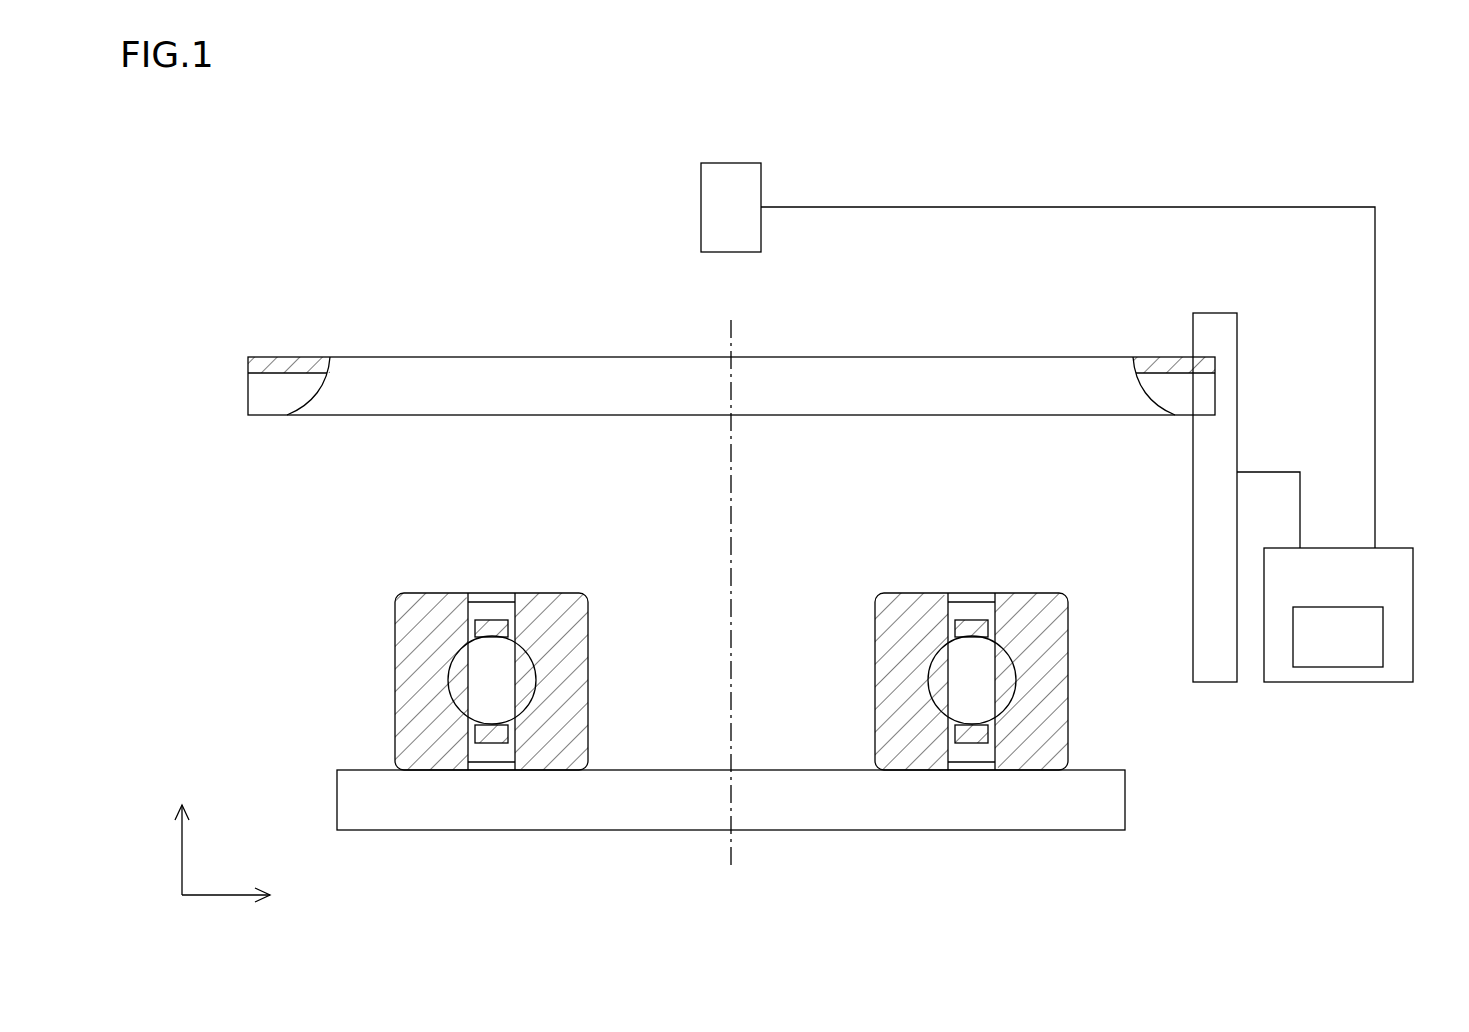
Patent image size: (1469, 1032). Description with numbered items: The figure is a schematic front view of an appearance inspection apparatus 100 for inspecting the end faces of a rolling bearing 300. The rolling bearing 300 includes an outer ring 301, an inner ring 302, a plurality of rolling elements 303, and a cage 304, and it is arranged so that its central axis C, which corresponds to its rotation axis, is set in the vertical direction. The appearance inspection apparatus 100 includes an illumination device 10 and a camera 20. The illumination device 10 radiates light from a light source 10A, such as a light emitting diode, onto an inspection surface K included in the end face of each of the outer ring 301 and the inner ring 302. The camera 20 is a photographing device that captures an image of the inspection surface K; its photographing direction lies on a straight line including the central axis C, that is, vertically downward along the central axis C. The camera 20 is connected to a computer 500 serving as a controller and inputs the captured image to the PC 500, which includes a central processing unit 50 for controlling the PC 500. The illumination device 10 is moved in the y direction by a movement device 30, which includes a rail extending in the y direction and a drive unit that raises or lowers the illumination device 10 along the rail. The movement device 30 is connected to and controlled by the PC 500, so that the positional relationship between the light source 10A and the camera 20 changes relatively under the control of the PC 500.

The appearance inspection apparatus 100 is at (413, 287).
The illumination device 10 is at (1015, 357).
The light source 10A is at (297, 357).
The camera 20 is at (733, 185).
The movement device 30 is at (1213, 683).
The computer (PC) 500 is at (1359, 611).
The central processing unit (CPU) 50 is at (1340, 667).
The rolling bearing 300 is at (372, 660).
The outer ring 301 is at (418, 606).
The inner ring 302 is at (565, 606).
The rolling elements 303 is at (470, 697).
The cage 304 is at (482, 628).
The inspection surface K is at (550, 593).
The central axis C is at (733, 527).